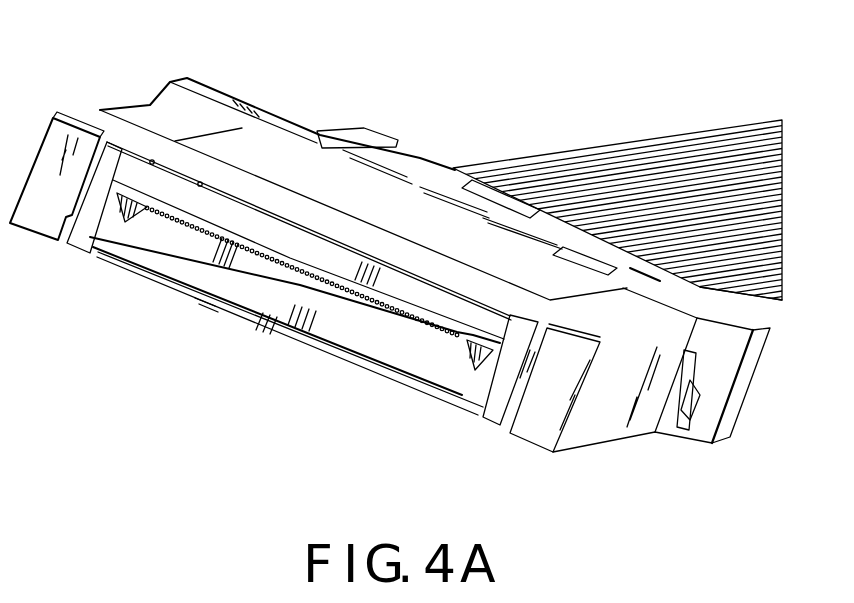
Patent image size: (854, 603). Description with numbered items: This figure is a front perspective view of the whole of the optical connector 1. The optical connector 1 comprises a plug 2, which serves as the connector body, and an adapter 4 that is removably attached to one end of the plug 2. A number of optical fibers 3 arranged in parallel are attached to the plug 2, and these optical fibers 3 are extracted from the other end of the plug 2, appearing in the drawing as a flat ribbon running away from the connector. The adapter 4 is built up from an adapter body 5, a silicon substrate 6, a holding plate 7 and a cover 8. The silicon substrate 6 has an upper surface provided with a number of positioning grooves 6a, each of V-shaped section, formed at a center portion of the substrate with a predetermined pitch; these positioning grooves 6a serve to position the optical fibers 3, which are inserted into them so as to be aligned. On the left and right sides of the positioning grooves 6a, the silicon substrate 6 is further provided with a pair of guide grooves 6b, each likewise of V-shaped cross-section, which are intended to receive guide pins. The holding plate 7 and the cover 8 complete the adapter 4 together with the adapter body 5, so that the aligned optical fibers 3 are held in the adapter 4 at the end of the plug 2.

The optical connector 1 is at (405, 120).
The plug 2 is at (612, 437).
The optical fibers 3 is at (608, 147).
The adapter 4 is at (157, 280).
The adapter body 5 is at (400, 380).
The silicon substrate 6 is at (123, 252).
The positioning grooves 6a is at (487, 300).
The guide grooves 6b is at (150, 193).
The holding plate 7 is at (150, 162).
The cover 8 is at (153, 177).